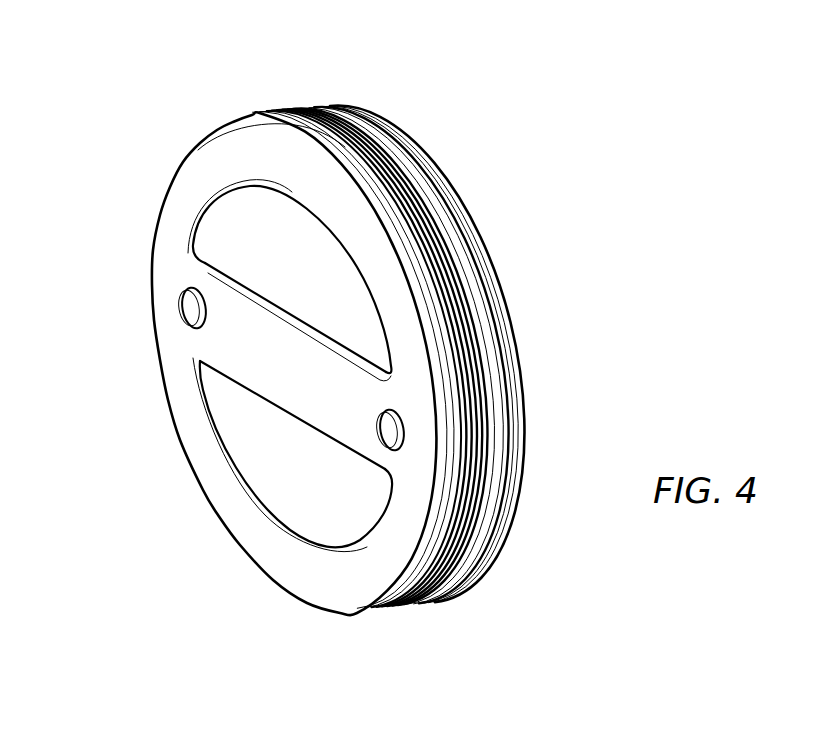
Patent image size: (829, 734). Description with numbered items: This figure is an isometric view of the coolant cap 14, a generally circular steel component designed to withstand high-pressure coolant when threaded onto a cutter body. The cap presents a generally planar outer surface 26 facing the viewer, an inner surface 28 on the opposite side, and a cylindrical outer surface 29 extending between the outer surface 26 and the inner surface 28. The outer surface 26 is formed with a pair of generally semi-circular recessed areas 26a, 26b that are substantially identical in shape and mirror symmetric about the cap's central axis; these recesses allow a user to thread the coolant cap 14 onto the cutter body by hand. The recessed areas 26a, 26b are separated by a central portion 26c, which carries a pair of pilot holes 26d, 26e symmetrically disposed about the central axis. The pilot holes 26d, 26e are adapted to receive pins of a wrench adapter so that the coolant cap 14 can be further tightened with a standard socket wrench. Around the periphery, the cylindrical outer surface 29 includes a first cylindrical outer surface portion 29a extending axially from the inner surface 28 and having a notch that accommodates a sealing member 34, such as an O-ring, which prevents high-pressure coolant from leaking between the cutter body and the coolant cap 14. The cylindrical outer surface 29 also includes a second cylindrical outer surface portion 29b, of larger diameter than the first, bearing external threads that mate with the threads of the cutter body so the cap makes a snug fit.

The coolant cap 14 is at (113, 133).
The outer surface 26 is at (231, 446).
The recessed area 26a is at (275, 248).
The recessed area 26b is at (297, 482).
The central portion 26c is at (255, 345).
The pilot hole 26d is at (196, 310).
The pilot hole 26e is at (390, 450).
The inner surface 28 is at (511, 291).
The cylindrical outer surface 29 is at (241, 110).
The first cylindrical outer surface portion 29a is at (351, 110).
The second cylindrical outer surface portion 29b is at (271, 107).
The sealing member 34 is at (410, 175).